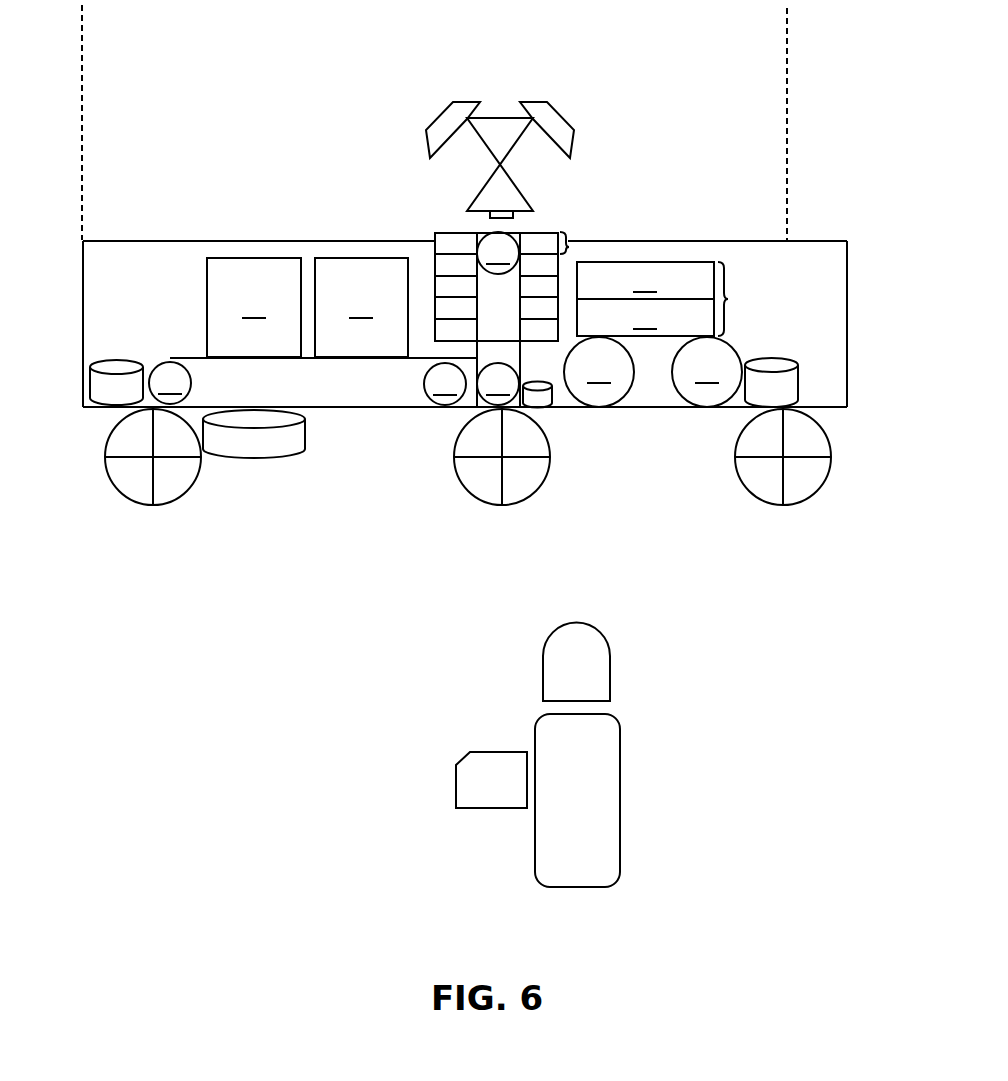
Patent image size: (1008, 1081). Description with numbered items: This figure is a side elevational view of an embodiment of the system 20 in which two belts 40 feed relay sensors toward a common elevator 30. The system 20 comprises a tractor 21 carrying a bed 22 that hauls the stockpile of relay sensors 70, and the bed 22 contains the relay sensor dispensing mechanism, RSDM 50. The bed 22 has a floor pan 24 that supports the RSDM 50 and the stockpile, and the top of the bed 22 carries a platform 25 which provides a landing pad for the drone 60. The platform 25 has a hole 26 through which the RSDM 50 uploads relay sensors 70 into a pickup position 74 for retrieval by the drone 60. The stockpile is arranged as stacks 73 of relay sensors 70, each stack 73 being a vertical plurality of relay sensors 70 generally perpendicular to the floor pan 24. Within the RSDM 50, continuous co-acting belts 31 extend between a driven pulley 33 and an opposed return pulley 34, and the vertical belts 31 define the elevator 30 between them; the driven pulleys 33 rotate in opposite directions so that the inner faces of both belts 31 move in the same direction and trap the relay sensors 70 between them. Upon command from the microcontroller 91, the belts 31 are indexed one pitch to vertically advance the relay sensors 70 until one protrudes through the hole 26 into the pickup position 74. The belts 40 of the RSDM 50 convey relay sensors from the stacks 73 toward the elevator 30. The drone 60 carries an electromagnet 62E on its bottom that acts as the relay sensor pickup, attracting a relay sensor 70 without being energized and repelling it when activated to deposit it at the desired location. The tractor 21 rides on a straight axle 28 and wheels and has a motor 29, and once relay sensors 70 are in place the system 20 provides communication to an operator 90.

The system 20 is at (240, 541).
The tractor 21 is at (140, 240).
The bed 22 is at (140, 240).
The floor pan 24 is at (675, 407).
The platform 25 is at (252, 240).
The hole 26 is at (423, 242).
The straight axle 28 is at (127, 468).
The motor 29 is at (112, 391).
The elevator 30 is at (490, 342).
The belt 31 is at (522, 367).
The driven pulley 33 is at (445, 372).
The return pulley 34 is at (529, 319).
The belt 40 is at (183, 357).
The relay sensor dispensing mechanism 50 is at (86, 62).
The drone 60 is at (597, 122).
The electromagnet 62E is at (514, 215).
The relay sensor 70 is at (442, 305).
The stack 73 is at (440, 232).
The pickup position 74 is at (569, 243).
The operator 90 is at (605, 793).
The microcontroller 91 is at (477, 778).